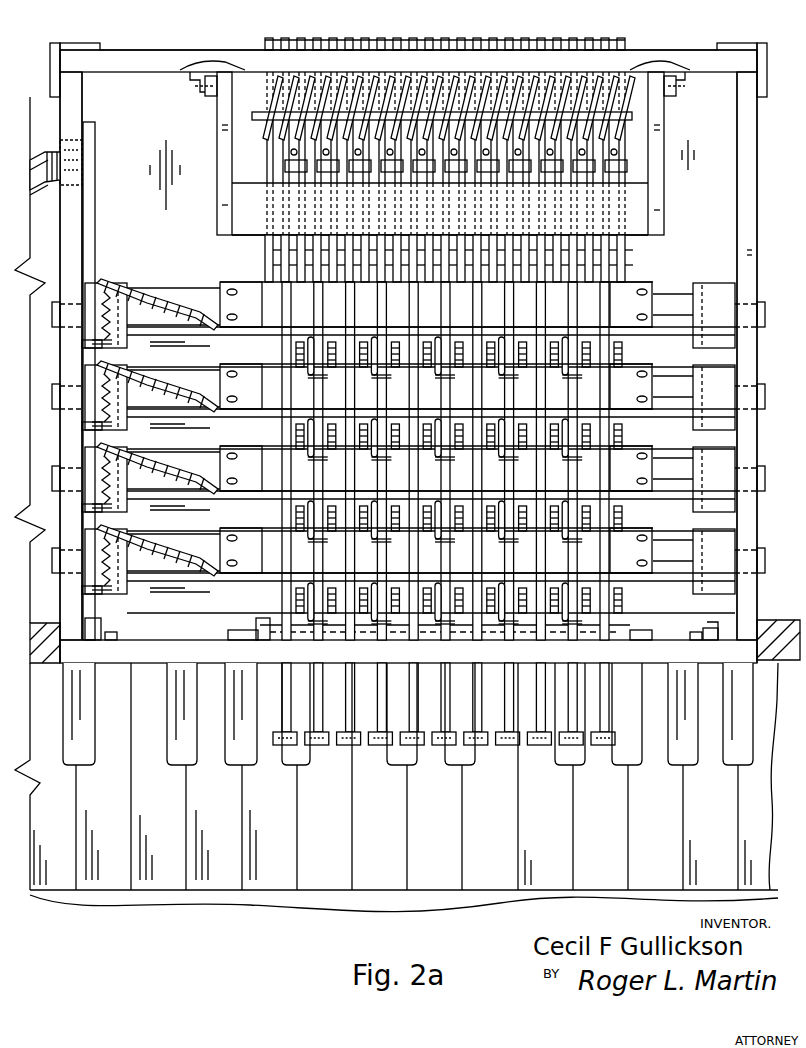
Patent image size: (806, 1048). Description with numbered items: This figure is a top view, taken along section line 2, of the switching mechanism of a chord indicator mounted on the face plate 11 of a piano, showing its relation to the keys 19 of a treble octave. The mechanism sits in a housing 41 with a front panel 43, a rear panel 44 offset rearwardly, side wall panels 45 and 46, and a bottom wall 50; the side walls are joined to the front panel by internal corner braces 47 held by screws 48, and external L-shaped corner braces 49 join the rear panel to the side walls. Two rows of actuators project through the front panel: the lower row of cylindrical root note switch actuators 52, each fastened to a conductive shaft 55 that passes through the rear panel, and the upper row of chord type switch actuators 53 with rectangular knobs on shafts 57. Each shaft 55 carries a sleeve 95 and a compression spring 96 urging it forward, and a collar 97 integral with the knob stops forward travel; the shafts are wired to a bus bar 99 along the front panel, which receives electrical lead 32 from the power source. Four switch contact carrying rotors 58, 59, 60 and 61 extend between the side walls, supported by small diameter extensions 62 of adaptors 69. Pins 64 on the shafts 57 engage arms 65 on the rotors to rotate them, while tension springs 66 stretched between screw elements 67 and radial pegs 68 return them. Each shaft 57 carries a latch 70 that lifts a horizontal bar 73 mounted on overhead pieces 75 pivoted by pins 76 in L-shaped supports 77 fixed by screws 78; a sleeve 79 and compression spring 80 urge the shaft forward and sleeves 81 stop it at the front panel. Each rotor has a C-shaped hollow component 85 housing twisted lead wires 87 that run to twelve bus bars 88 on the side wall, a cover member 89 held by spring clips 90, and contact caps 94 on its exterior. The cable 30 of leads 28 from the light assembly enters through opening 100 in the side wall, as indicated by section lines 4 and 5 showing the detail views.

The section line 2— 2 is at (12, 97).
The section line 4— 4 is at (128, 273).
The section line 5— 5 is at (245, 268).
The face plate 11 is at (30, 658).
The keys 19 is at (688, 768).
The electrical leads 28 is at (55, 150).
The cable 30 is at (48, 192).
The electrical lead 32 is at (700, 625).
The housing 41 is at (155, 165).
The front panel 43 is at (703, 663).
The rear panel 44 is at (665, 50).
The side wall panel 45 is at (82, 102).
The side wall panel 46 is at (757, 172).
The internal corner braces 47 is at (728, 612).
The screws 48 is at (402, 626).
The L-shaped corner braces 49 is at (58, 46).
The bottom wall 50 is at (693, 173).
The switch actuators 52 is at (445, 710).
The switch actuators 53 is at (316, 748).
The shafts 55 is at (395, 38).
The shafts 57 is at (345, 38).
The rotor 58 is at (175, 594).
The rotor 59 is at (423, 517).
The rotor 60 is at (676, 433).
The rotor 61 is at (673, 353).
The small diameter extensions 62 is at (55, 320).
The pins 64 is at (282, 468).
The arms 65 is at (318, 422).
The tension springs 66 is at (106, 438).
The screw elements 67 is at (82, 475).
The pegs 68 is at (106, 438).
The adaptors 69 is at (400, 429).
The latch 70 is at (280, 238).
The horizontal bar 73 is at (636, 238).
The overhead pieces 75 is at (230, 148).
The pins 76 is at (232, 90).
The L-shaped supports 77 is at (190, 74).
The screws 78 is at (190, 66).
The sleeve 79 is at (612, 172).
The compression spring 80 is at (600, 130).
The sleeves 81 is at (445, 651).
The elongated hollow component 85 is at (201, 390).
The electrical lead wires 87 is at (178, 262).
The bus bars 88 is at (95, 176).
The elongated flat rectangular member 89 is at (628, 282).
The spring type clips 90 is at (436, 427).
The cap 94 is at (628, 518).
The sleeve 95 is at (256, 120).
The compression spring 96 is at (630, 102).
The collar 97 is at (256, 620).
The bus bar 99 is at (228, 634).
The opening 100 is at (64, 140).